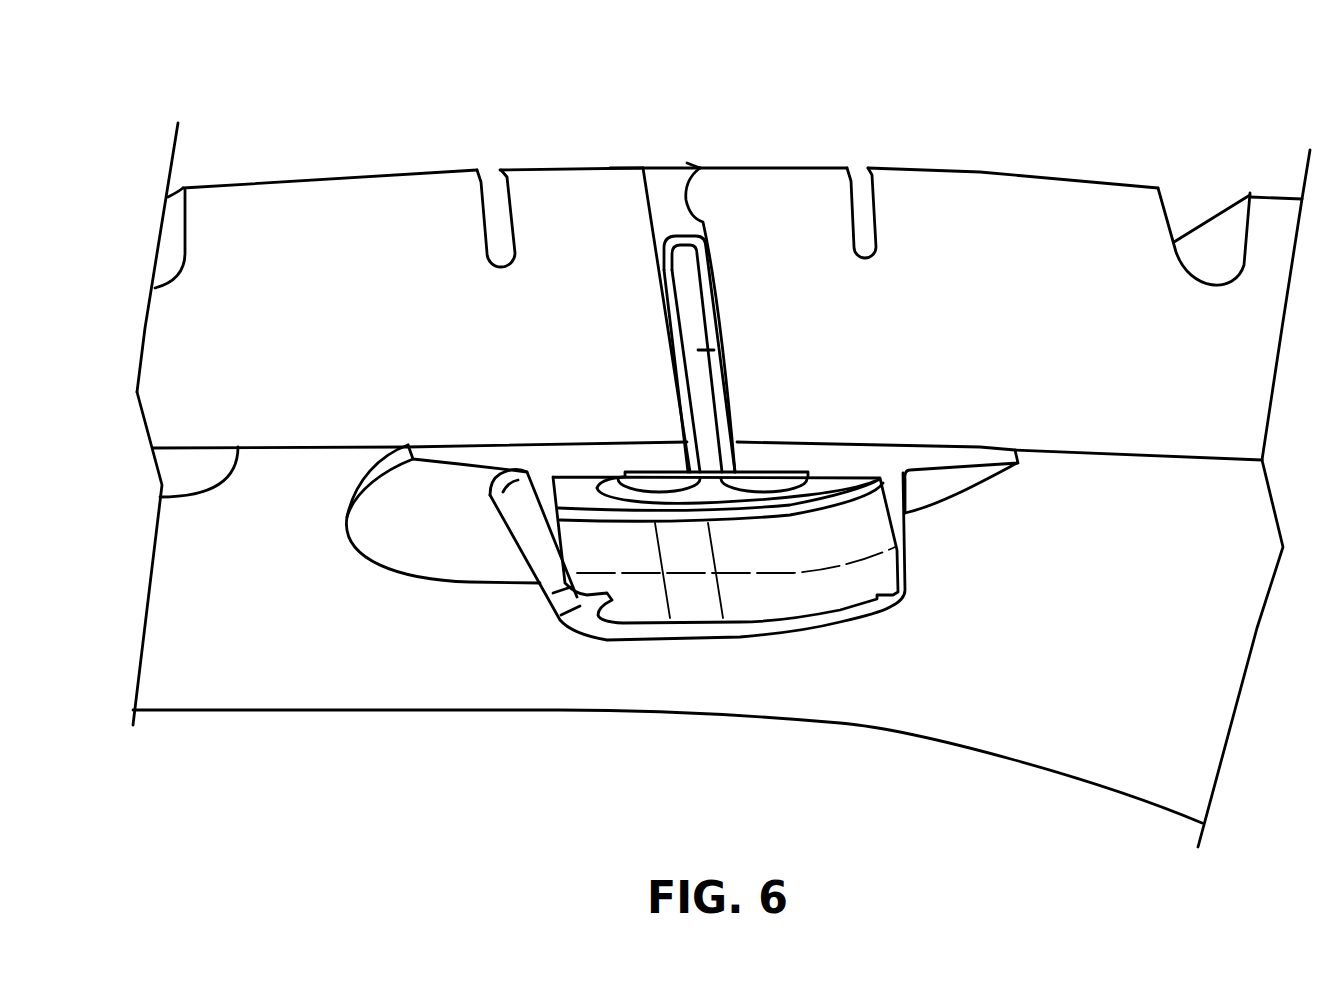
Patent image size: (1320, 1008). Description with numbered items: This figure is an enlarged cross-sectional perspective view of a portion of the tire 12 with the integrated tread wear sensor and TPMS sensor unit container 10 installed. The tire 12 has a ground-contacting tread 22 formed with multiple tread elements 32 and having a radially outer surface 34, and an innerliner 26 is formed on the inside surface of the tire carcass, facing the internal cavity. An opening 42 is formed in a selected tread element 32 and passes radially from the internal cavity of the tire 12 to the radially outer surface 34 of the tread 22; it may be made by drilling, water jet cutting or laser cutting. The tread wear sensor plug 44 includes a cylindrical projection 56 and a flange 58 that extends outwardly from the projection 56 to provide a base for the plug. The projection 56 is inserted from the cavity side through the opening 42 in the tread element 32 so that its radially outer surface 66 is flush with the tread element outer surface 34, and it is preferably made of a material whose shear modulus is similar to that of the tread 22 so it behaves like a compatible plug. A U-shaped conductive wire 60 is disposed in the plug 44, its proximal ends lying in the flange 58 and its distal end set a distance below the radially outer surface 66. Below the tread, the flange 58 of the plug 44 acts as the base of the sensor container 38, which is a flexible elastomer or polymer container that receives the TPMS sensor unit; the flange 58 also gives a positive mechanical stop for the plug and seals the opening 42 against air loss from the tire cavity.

The integrated tread wear sensor and TPMS sensor unit container 10 is at (689, 72).
The tire 12 is at (287, 172).
The tread 22 is at (1166, 212).
The innerliner 26 is at (160, 497).
The tread element 32 is at (794, 192).
The radially outer surface 34 is at (593, 168).
The sensor container 38 is at (731, 650).
The opening 42 is at (687, 163).
The tread wear sensor plug 44 is at (730, 302).
The cylindrical projection 56 is at (648, 211).
The flange 58 is at (823, 460).
The conductive wire 60 is at (714, 350).
The radially outer surface of the projection 66 is at (673, 167).